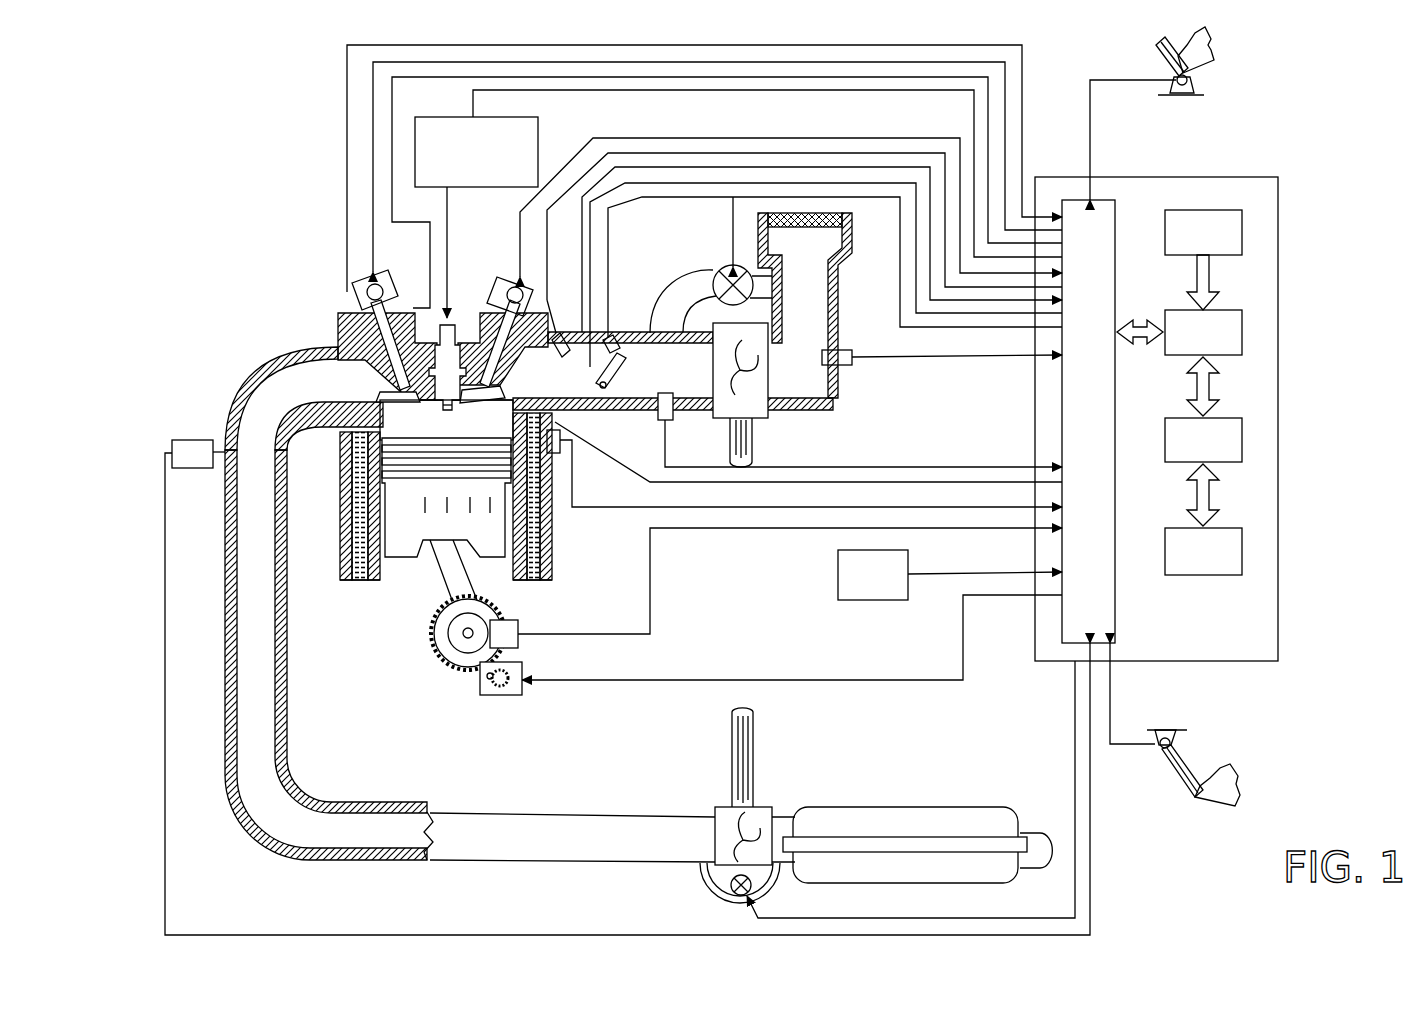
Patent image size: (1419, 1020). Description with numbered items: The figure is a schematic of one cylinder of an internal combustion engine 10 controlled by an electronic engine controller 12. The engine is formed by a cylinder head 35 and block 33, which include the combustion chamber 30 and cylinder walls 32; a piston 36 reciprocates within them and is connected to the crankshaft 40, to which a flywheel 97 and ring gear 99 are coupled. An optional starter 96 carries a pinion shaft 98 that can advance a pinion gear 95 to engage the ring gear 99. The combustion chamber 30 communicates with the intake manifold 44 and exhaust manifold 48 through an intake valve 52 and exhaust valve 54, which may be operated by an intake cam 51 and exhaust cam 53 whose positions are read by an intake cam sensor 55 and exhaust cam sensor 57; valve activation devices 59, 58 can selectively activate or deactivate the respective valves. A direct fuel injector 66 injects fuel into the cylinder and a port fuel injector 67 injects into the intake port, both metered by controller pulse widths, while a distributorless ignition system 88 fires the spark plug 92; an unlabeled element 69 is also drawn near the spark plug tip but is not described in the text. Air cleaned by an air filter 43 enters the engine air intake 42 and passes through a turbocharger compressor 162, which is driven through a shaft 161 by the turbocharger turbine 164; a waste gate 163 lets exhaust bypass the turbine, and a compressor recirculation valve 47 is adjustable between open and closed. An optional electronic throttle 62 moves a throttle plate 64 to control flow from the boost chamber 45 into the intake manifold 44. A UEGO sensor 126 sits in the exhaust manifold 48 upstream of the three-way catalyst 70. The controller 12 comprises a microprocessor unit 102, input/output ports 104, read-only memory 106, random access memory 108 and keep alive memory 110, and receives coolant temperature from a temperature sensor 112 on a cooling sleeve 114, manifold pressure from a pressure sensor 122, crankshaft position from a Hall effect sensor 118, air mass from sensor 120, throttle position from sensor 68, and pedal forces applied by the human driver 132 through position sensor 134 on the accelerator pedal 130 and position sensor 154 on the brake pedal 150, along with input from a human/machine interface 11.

The internal combustion engine 10 is at (270, 262).
The human/machine interface 11 is at (873, 575).
The electronic engine controller 12 is at (1278, 177).
The combustion chamber 30 is at (378, 503).
The cylinder walls 32 is at (387, 567).
The block 33 is at (345, 462).
The cylinder head 35 is at (338, 312).
The piston 36 is at (427, 527).
The crankshaft 40 is at (450, 657).
The engine air intake 42 is at (670, 235).
The air filter 43 is at (822, 232).
The intake manifold 44 is at (582, 385).
The boost chamber 45 is at (688, 383).
The compressor recirculation valve 47 is at (722, 268).
The exhaust manifold 48 is at (316, 391).
The intake cam 51 is at (516, 270).
The intake valve 52 is at (502, 391).
The exhaust cam 53 is at (381, 282).
The exhaust valve 54 is at (380, 373).
The intake cam sensor 55 is at (530, 295).
The exhaust cam sensor 57 is at (365, 300).
The valve activation device 58 is at (392, 302).
The valve activation device 59 is at (507, 306).
The electronic throttle 62 is at (622, 364).
The throttle plate 64 is at (610, 390).
The direct fuel injector 66 is at (562, 446).
The port fuel injector 67 is at (561, 333).
The throttle position sensor 68 is at (613, 343).
The direct fuel injector 69 is at (445, 410).
The three-way catalyst 70 is at (840, 808).
The distributorless ignition system 88 is at (538, 128).
The spark plug 92 is at (452, 322).
The pinion gear 95 is at (505, 690).
The starter 96 is at (513, 693).
The flywheel 97 is at (438, 630).
The pinion shaft 98 is at (493, 682).
The ring gear 99 is at (463, 678).
The microprocessor unit 102 is at (1242, 336).
The input/output ports 104 is at (1115, 210).
The read-only memory 106 is at (1242, 230).
The random access memory 108 is at (1242, 440).
The keep alive memory 110 is at (1242, 552).
The temperature sensor 112 is at (593, 493).
The cooling sleeve 114 is at (547, 533).
The Hall effect sensor 118 is at (518, 623).
The air mass sensor 120 is at (846, 350).
The pressure sensor 122 is at (662, 420).
The Universal Exhaust Gas Oxygen sensor 126 is at (172, 444).
The accelerator pedal 130 is at (1160, 57).
The human driver 132 is at (1212, 46).
The position sensor 134 is at (1195, 80).
The brake pedal 150 is at (1190, 790).
The position sensor 154 is at (1152, 740).
The shaft 161 is at (733, 438).
The turbocharger compressor 162 is at (762, 410).
The waste gate 163 is at (735, 898).
The turbocharger turbine 164 is at (722, 805).